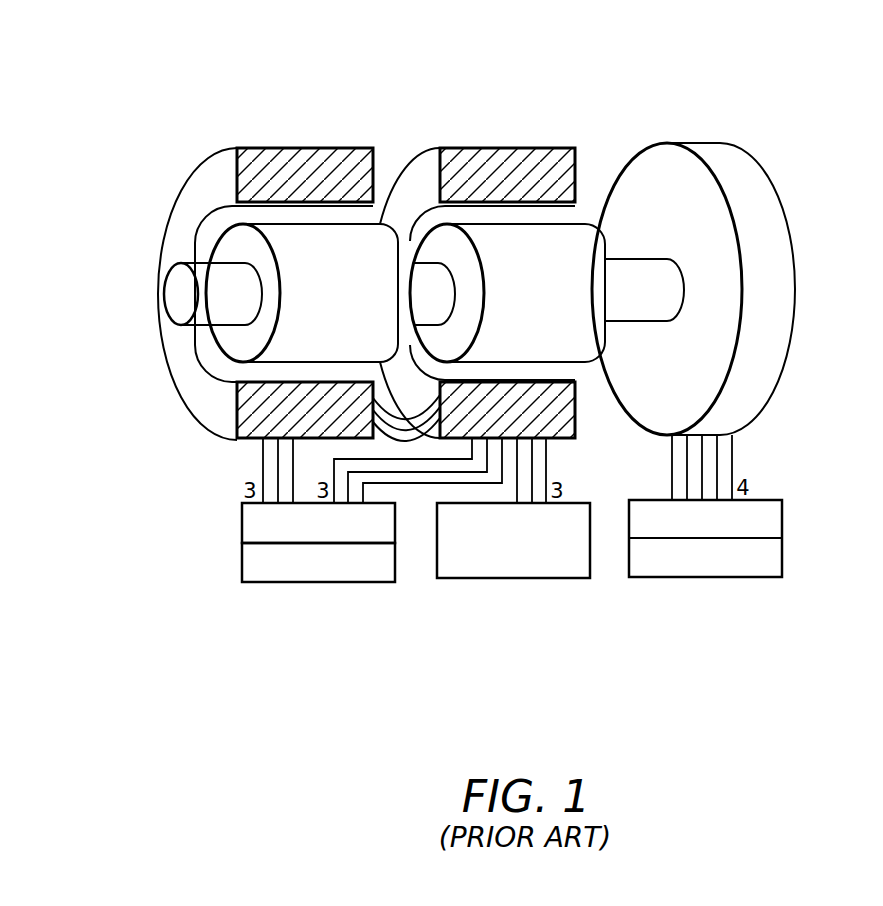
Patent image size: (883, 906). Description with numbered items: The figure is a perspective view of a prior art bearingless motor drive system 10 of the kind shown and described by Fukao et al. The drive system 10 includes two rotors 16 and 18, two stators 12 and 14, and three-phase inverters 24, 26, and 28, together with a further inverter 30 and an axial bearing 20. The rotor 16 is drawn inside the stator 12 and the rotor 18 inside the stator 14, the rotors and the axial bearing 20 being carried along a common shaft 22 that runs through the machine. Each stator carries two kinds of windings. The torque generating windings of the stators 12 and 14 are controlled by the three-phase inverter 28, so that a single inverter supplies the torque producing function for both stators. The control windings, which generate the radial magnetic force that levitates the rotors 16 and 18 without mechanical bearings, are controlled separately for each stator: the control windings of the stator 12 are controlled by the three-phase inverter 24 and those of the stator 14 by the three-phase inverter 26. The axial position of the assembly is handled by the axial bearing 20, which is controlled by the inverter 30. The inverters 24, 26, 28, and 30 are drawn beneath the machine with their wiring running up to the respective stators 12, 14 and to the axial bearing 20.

The bearingless motor drive system 10 is at (754, 123).
The stator 12 is at (343, 148).
The stator 14 is at (530, 148).
The rotor 16 is at (302, 293).
The rotor 18 is at (507, 293).
The axial bearing 20 is at (700, 144).
The shaft 22 is at (170, 295).
The three-phase inverter 24 is at (242, 515).
The three-phase inverter 26 is at (242, 565).
The three-phase inverter 28 is at (481, 580).
The inverter 30 is at (782, 515).